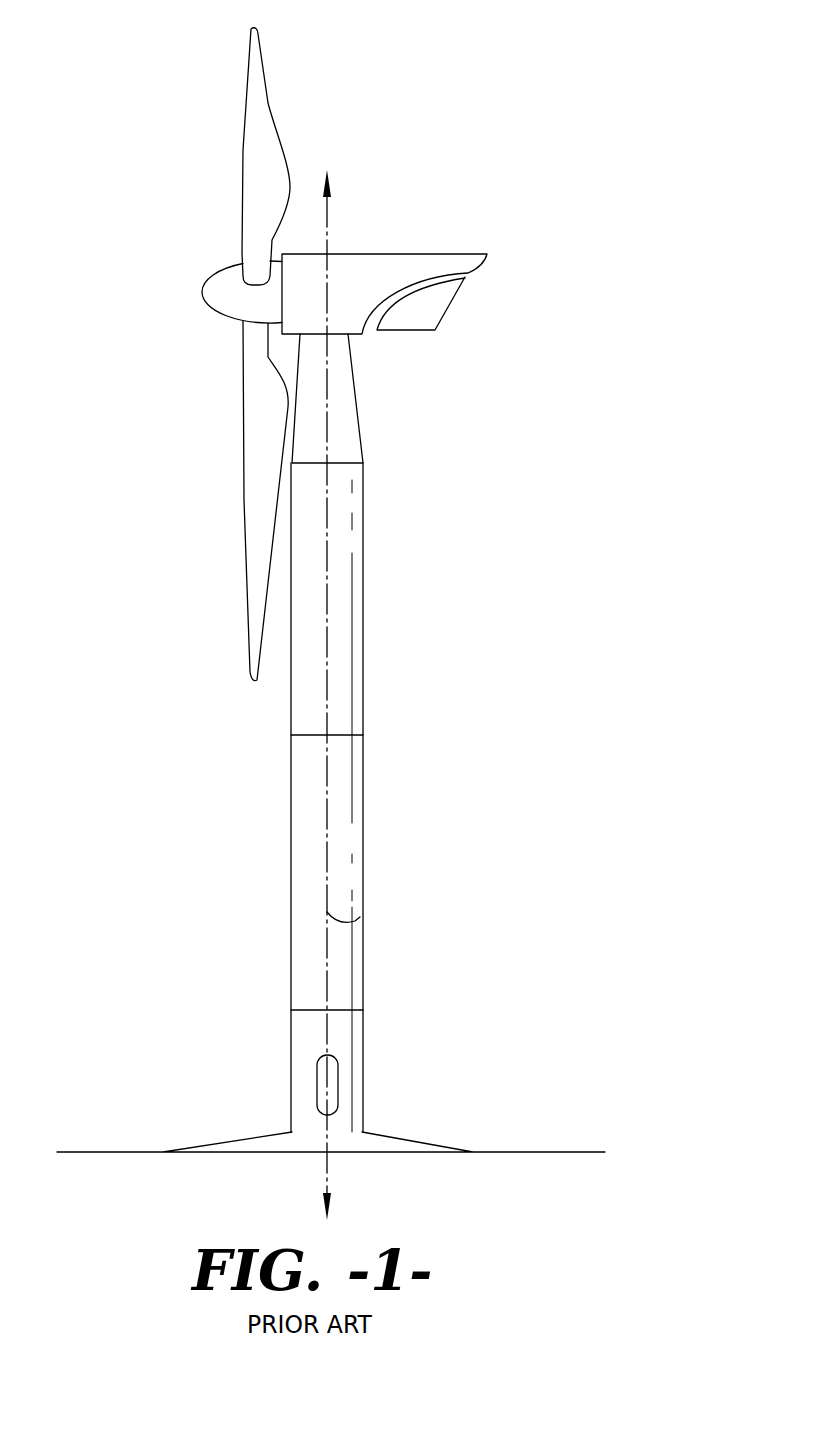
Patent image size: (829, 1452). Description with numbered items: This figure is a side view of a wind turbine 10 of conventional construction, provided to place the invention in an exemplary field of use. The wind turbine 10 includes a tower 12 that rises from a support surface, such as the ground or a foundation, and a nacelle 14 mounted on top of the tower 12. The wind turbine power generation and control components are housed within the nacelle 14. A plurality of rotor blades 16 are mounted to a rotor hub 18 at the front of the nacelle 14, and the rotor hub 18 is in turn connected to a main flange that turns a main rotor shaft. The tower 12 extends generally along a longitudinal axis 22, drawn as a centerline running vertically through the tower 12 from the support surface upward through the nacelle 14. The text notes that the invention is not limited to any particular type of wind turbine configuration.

The wind turbine 10 is at (158, 141).
The tower 12 is at (305, 835).
The nacelle 14 is at (371, 267).
The rotor blades 16 is at (255, 497).
The rotor hub 18 is at (217, 285).
The longitudinal axis 22 is at (372, 913).